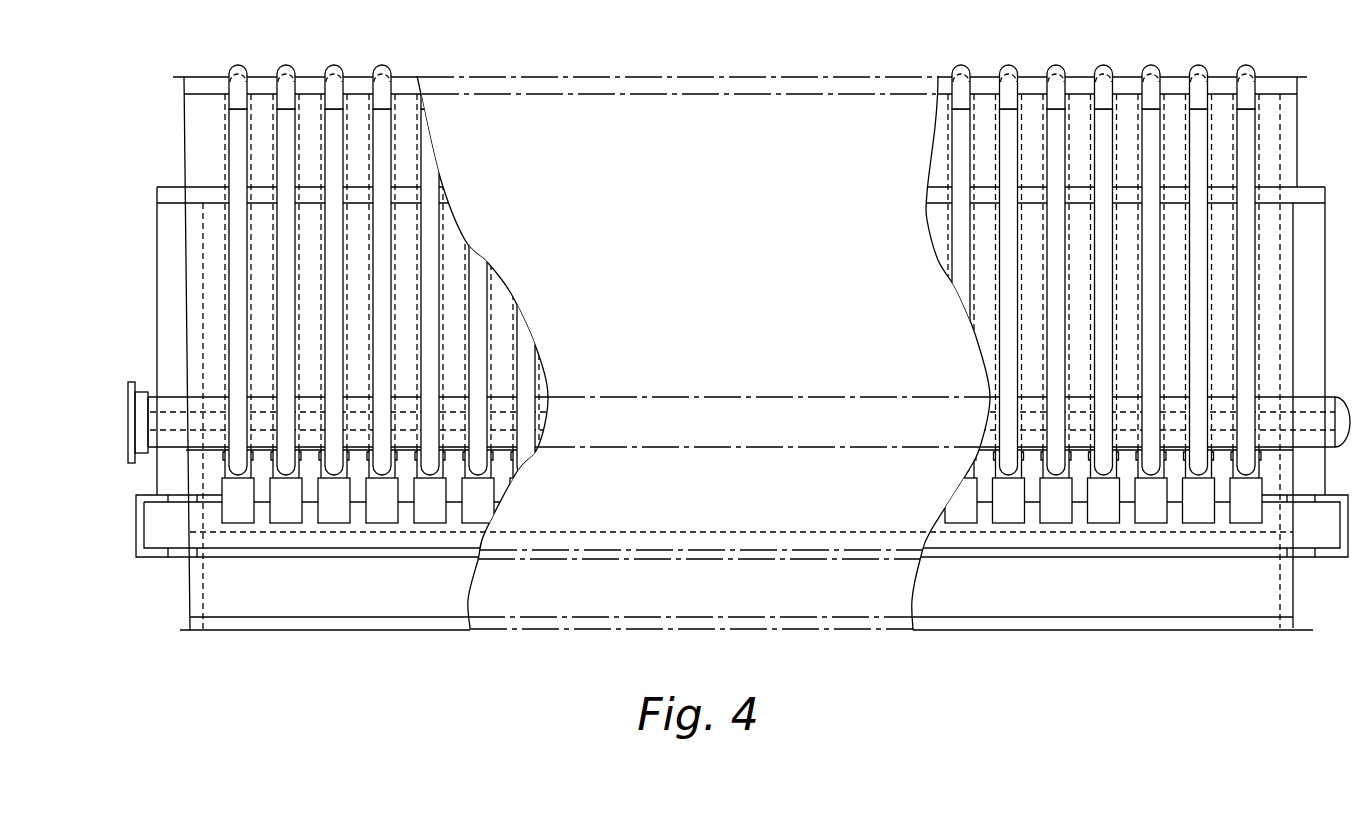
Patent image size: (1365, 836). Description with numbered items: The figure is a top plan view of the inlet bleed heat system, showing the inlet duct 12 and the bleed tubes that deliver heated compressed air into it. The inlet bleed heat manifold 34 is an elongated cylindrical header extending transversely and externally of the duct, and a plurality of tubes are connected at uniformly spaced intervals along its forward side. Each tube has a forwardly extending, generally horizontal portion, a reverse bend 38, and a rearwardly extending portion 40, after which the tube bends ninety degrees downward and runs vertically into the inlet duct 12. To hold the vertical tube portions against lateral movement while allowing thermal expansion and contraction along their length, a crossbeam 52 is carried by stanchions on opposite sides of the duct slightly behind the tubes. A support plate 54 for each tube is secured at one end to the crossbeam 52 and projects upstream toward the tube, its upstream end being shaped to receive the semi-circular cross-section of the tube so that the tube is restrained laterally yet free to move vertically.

The inlet duct 12 is at (1297, 103).
The inlet bleed heat manifold 34 is at (172, 397).
The reverse bend 38 is at (232, 64).
The rearwardly extending portion 40 is at (232, 240).
The crossbeam 52 is at (240, 552).
The support plate 54 is at (232, 490).